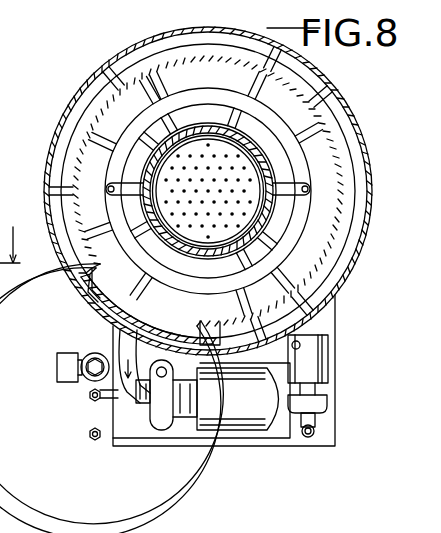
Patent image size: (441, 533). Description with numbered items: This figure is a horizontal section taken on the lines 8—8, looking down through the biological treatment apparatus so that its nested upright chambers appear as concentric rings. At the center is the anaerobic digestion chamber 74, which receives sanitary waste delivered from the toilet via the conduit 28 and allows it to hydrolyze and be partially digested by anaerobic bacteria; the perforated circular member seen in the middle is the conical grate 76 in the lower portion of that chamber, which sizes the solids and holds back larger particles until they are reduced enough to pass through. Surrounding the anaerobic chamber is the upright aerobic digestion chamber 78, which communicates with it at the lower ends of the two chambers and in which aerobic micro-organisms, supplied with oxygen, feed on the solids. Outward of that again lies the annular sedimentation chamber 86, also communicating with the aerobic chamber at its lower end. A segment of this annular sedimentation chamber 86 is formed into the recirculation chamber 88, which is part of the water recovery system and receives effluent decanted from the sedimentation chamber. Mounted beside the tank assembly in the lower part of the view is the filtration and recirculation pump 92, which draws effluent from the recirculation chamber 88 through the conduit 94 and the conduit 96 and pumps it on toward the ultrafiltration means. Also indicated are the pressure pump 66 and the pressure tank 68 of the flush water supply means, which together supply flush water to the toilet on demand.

The section line 8 is at (16, 244).
The conduit 28 is at (70, 380).
The pressure pump 66 is at (313, 388).
The pressure tank 68 is at (186, 191).
The anaerobic digestion chamber 74 is at (188, 142).
The conical grate 76 is at (238, 163).
The aerobic digestion chamber 78 is at (114, 108).
The sedimentation chamber 86 is at (52, 147).
The recirculation chamber 88 is at (100, 312).
The filtration and recirculation pump 92 is at (157, 418).
The conduit 94 is at (122, 350).
The conduit 96 is at (105, 402).